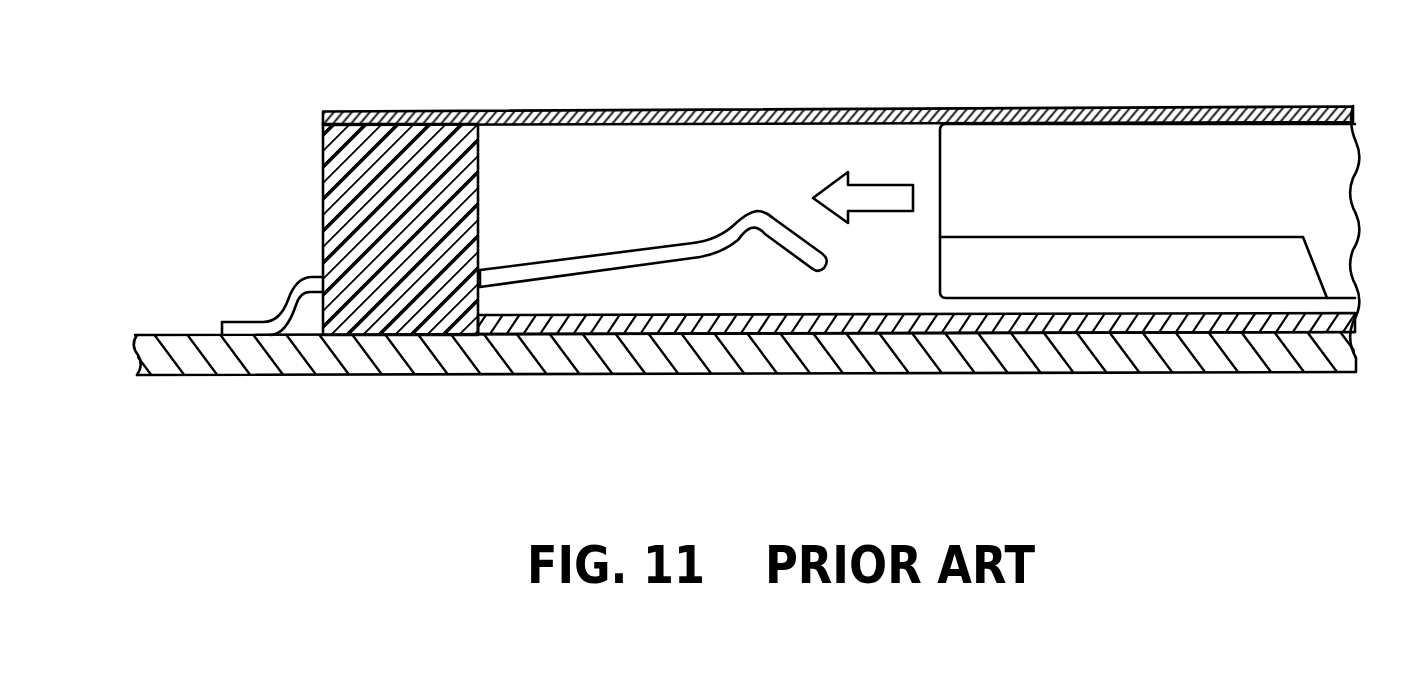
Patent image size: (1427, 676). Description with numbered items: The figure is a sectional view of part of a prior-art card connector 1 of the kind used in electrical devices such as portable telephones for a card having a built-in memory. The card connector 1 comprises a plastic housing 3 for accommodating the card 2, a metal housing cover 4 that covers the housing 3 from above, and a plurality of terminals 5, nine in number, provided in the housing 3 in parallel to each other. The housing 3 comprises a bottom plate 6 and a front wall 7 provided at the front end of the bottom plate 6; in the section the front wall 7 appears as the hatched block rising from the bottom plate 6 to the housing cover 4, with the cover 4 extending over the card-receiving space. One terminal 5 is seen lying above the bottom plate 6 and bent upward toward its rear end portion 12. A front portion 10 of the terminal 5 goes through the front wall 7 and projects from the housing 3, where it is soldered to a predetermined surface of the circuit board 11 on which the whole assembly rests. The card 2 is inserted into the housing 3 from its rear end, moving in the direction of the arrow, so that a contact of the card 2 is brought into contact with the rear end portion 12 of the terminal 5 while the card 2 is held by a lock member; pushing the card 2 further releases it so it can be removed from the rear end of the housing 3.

The card connector 1 is at (747, 230).
The card 2 is at (1328, 190).
The housing 3 is at (405, 276).
The housing cover 4 is at (1065, 106).
The terminal 5 is at (653, 236).
The bottom plate 6 is at (748, 318).
The front wall 7 is at (403, 300).
The front portion 10 is at (250, 327).
The circuit board 11 is at (864, 348).
The rear end portion 12 is at (757, 211).